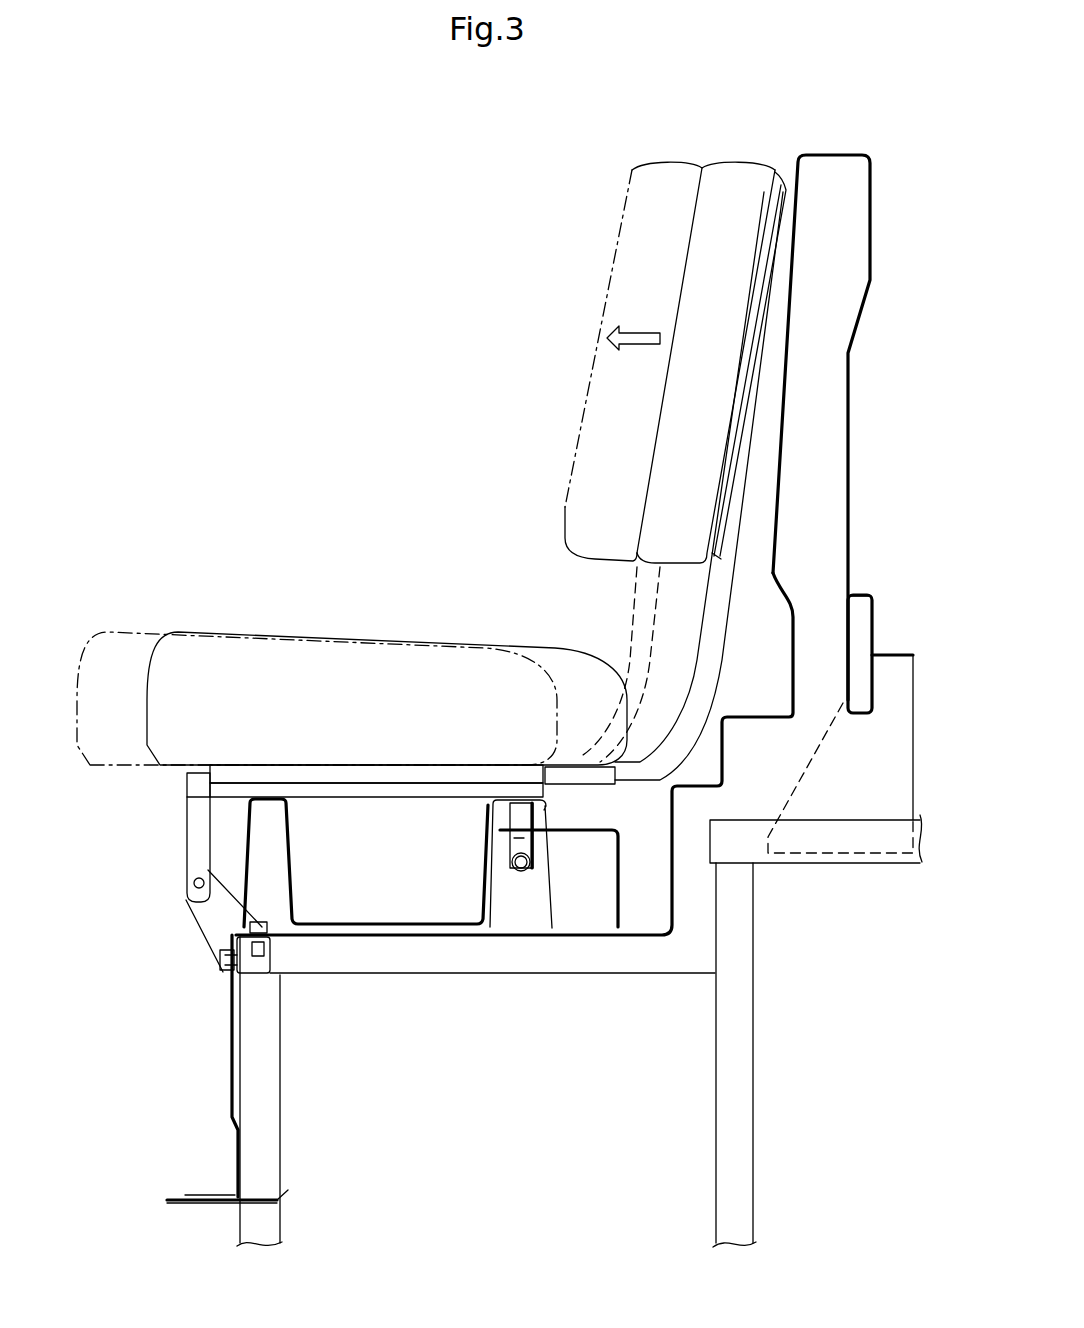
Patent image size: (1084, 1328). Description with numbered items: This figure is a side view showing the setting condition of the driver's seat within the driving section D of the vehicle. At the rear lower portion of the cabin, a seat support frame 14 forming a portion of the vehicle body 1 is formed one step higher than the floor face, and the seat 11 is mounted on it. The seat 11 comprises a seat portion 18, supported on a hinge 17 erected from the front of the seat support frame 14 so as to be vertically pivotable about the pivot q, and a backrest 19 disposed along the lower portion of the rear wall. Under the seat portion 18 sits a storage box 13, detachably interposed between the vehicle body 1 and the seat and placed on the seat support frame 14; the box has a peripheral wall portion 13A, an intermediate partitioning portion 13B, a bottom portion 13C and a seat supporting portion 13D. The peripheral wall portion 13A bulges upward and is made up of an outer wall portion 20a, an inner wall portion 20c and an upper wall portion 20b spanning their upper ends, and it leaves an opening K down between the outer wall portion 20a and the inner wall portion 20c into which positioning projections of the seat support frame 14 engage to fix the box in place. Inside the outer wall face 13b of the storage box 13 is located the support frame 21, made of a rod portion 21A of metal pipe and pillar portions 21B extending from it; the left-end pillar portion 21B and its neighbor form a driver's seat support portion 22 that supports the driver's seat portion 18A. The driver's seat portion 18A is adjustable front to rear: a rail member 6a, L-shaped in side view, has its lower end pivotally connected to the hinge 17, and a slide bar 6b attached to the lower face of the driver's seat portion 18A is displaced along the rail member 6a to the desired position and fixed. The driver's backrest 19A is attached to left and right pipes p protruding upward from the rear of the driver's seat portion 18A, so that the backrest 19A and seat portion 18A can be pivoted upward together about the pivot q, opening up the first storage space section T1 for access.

The vehicle body 1 is at (893, 655).
The seat 11 is at (443, 548).
The storage box 13 is at (638, 902).
The peripheral wall portion 13A is at (193, 703).
The intermediate partitioning portion 13B is at (380, 797).
The bottom portion 13C is at (340, 915).
The seat supporting portion 13D is at (510, 800).
The outer wall face 13b is at (627, 860).
The seat support frame 14 is at (230, 1037).
The hinge 17 is at (203, 927).
The seat portion 18 is at (352, 652).
The driver's seat portion 18A is at (393, 647).
The backrest 19 is at (675, 419).
The driver's seat backrest 19A is at (647, 167).
The outer wall portion 20a is at (245, 818).
The upper wall portion 20b is at (267, 797).
The inner wall portion 20c is at (290, 820).
The support frame 21 is at (520, 934).
The rod portion 21A is at (523, 873).
The pillar portion 21B is at (503, 850).
The driver's seat support portion 22 is at (464, 846).
The rail member 6a is at (192, 780).
The slide bar 6b is at (417, 775).
The driving section D is at (409, 333).
The opening K is at (272, 902).
The first storage space section T1 is at (433, 824).
The pipe p is at (717, 648).
The pivot q is at (192, 881).